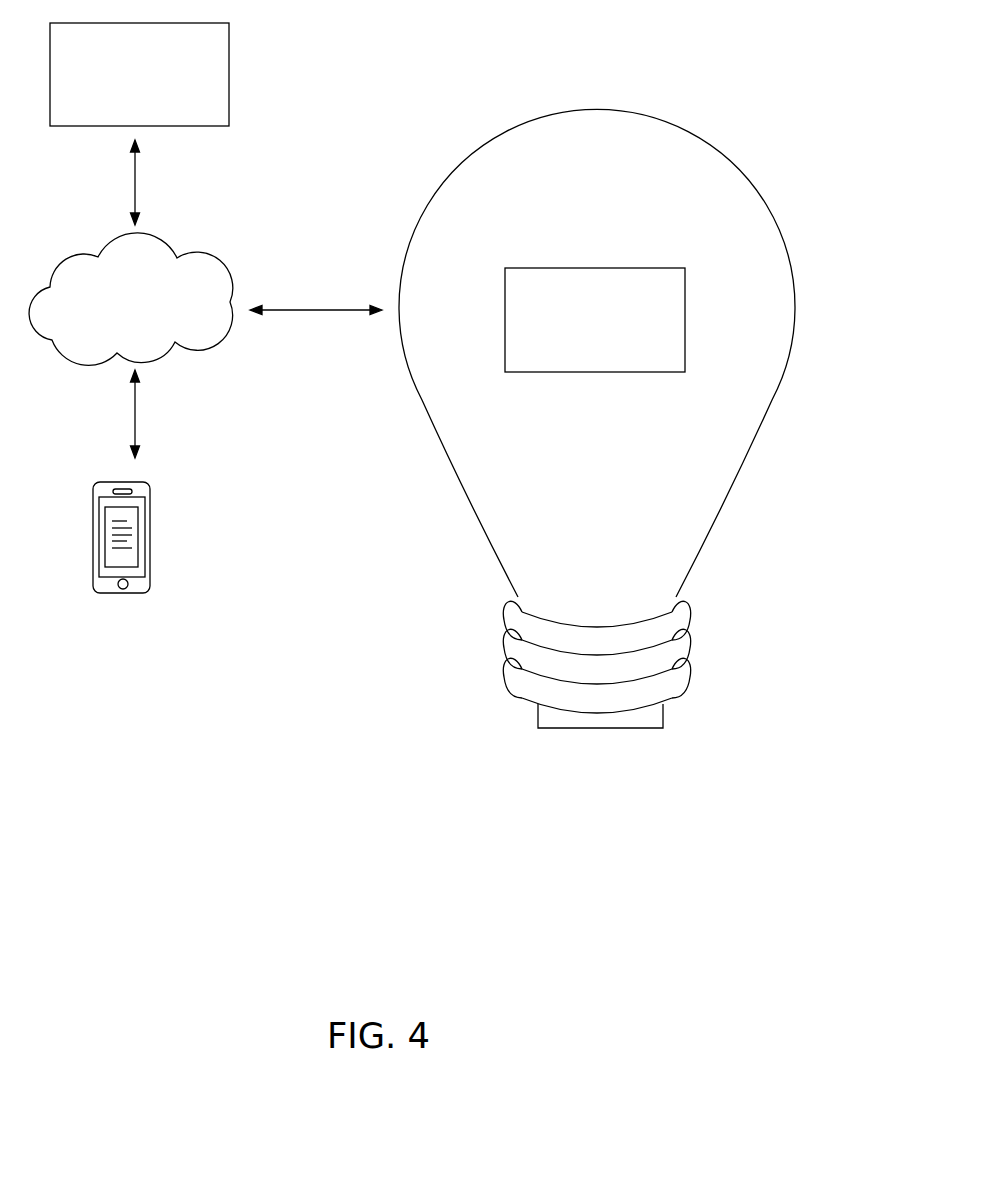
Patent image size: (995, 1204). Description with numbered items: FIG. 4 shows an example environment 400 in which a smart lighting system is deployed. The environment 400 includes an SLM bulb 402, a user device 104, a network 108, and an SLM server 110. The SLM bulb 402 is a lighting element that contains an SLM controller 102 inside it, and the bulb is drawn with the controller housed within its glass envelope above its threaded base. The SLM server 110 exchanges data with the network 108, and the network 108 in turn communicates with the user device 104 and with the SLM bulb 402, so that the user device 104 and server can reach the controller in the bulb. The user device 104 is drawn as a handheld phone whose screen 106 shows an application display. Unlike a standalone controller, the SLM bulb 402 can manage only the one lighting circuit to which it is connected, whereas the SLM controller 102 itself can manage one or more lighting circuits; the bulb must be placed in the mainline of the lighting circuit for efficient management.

The SLM server 110 is at (155, 112).
The network 108 is at (148, 325).
The user device 104 is at (108, 482).
The application display 106 is at (139, 519).
The SLM bulb 402 is at (672, 176).
The SLM controller 102 is at (612, 360).
The environment 400 is at (702, 945).